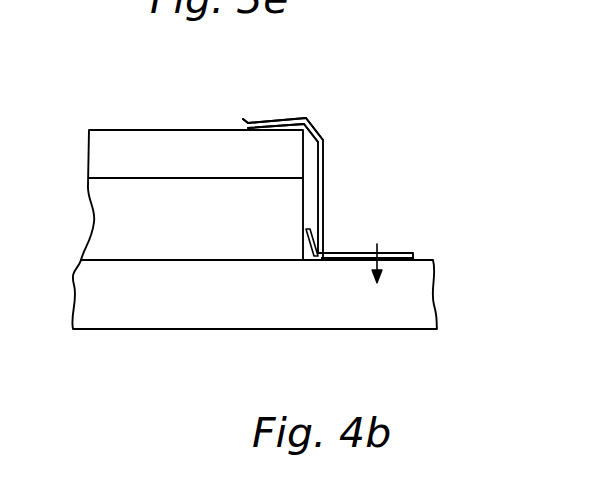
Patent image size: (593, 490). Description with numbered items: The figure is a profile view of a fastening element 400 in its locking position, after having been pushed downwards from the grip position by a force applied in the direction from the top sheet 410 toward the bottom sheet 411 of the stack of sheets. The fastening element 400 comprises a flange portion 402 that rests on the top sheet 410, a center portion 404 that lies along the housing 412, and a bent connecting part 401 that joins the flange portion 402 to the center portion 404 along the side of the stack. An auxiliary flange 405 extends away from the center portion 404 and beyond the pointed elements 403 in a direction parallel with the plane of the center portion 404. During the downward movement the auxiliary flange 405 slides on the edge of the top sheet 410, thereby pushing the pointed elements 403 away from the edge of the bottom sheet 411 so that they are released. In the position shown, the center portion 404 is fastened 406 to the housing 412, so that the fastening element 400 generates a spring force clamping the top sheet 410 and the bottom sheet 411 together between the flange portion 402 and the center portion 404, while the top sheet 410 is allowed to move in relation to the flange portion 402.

The fastening element 400 is at (320, 52).
The conductive foil / connector strip 401 is at (323, 176).
The flange portion 402 is at (285, 121).
The pointed elements 403 is at (324, 231).
The center portion 404 is at (409, 252).
The auxiliary flange 405 is at (316, 126).
The fastened 406 is at (377, 245).
The top sheet 410 is at (153, 148).
The bottom sheet 411 is at (107, 217).
The housing 412 is at (198, 318).